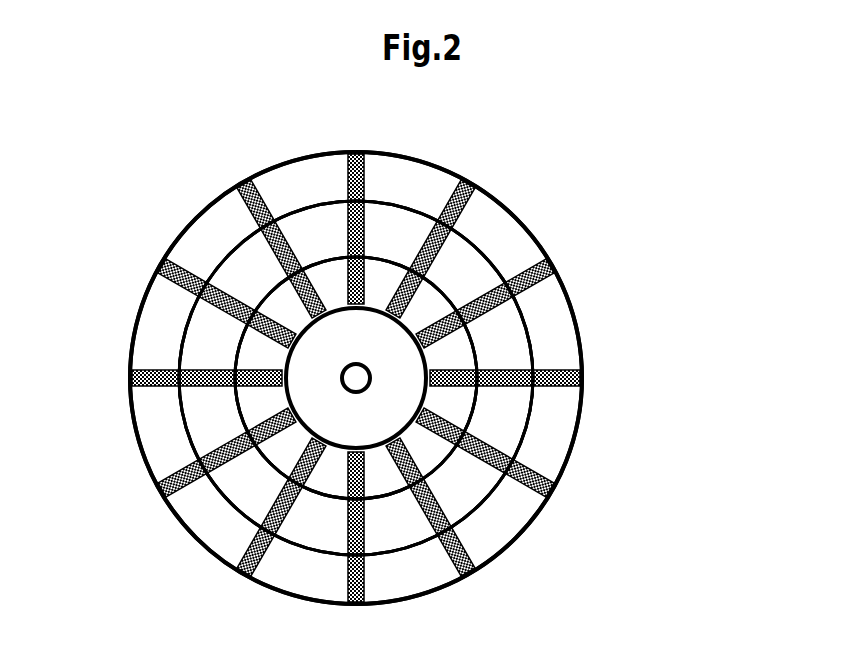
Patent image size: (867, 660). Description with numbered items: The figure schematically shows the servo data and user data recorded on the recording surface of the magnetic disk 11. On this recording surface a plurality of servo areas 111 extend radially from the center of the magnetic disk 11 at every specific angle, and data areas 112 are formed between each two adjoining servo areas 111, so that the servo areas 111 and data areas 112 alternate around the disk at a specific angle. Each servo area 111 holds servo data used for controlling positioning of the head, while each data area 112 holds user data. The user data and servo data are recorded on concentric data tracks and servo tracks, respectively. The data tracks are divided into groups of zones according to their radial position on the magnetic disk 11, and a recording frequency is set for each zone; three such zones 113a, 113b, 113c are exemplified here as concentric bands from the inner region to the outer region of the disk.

The magnetic disk 11 is at (132, 340).
The servo area 111 is at (558, 265).
The data area 112 is at (500, 232).
The zone 113a is at (557, 425).
The zone 113b is at (463, 487).
The zone 113c is at (458, 353).